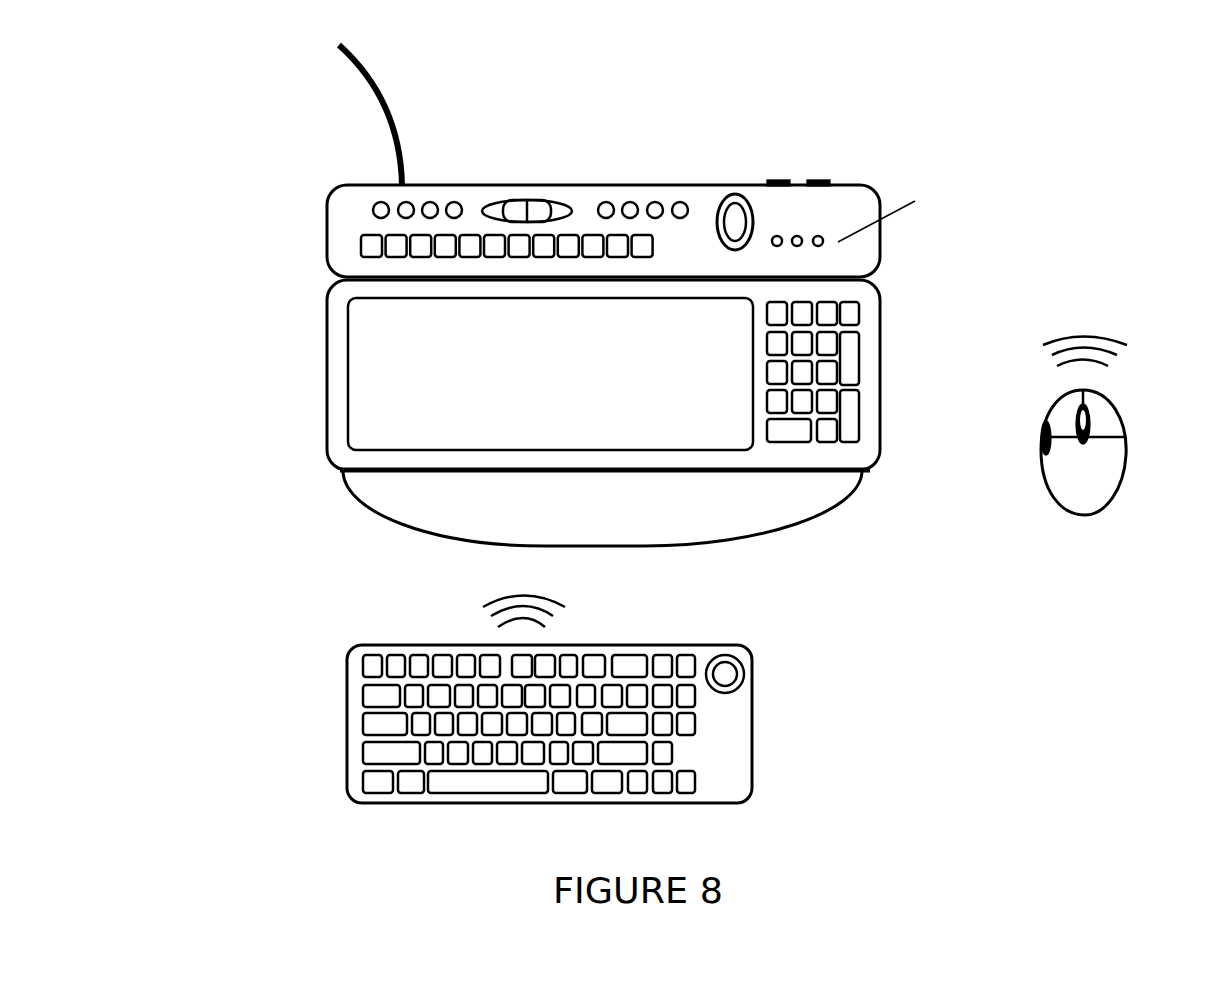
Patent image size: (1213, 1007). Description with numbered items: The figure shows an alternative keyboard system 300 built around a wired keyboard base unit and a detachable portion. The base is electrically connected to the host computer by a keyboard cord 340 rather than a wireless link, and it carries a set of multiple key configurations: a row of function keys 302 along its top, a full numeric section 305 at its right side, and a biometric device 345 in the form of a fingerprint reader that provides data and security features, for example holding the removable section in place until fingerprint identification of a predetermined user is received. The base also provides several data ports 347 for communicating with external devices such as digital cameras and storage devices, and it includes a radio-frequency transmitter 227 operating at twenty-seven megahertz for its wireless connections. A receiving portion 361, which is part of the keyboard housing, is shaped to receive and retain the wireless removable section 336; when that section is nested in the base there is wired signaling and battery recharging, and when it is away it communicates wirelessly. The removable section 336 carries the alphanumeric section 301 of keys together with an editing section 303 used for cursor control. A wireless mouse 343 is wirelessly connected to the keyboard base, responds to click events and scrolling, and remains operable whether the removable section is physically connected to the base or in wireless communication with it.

The keyboard system 300 is at (621, 28).
The keyboard cord 340 is at (390, 130).
The transmitter 227 is at (853, 203).
The function keys 302 is at (365, 247).
The biometric device 345 is at (730, 200).
The data ports 347 is at (818, 182).
The receiving portion 361 is at (362, 406).
The numeric section 305 is at (855, 357).
The wireless mouse 343 is at (1075, 515).
The removable section 336 is at (563, 720).
The alphanumeric section 301 is at (612, 749).
The editing section 303 is at (741, 662).